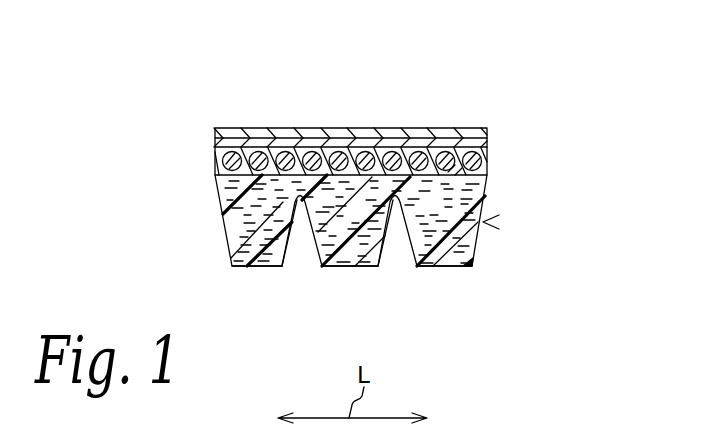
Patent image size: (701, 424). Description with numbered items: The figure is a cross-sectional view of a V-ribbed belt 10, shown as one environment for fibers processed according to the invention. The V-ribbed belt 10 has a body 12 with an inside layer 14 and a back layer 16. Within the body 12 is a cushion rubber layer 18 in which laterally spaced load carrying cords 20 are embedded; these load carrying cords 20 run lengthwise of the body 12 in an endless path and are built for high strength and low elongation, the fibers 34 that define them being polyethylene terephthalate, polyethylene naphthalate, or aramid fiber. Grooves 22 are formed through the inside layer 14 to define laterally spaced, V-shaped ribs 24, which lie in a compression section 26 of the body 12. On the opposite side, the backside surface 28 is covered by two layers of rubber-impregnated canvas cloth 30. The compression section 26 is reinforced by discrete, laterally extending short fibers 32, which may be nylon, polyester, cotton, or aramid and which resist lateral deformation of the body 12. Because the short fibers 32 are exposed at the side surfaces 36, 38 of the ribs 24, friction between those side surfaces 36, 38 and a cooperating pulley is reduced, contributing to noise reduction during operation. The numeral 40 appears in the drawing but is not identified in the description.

The V-ribbed belt 10 is at (516, 107).
The body 12 is at (485, 198).
The inside layer 14 is at (352, 267).
The back layer 16 is at (380, 147).
The cushion rubber layer 18 is at (215, 160).
The load carrying cords 20 is at (223, 162).
The grooves 22 is at (286, 237).
The V-shaped ribs 24 is at (257, 267).
The compression section 26 is at (483, 222).
The backside surface 28 is at (341, 147).
The rubber-impregnated canvas cloth 30 is at (269, 128).
The short fibers 32 is at (230, 242).
The fibers 34 is at (457, 153).
The side surface 36 is at (223, 215).
The side surface 38 is at (291, 241).
The pulley 40 is at (637, 417).